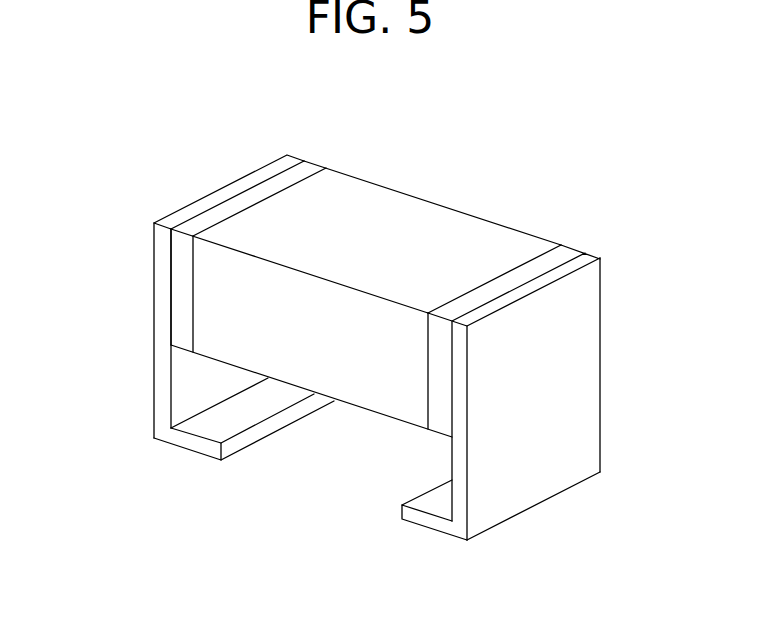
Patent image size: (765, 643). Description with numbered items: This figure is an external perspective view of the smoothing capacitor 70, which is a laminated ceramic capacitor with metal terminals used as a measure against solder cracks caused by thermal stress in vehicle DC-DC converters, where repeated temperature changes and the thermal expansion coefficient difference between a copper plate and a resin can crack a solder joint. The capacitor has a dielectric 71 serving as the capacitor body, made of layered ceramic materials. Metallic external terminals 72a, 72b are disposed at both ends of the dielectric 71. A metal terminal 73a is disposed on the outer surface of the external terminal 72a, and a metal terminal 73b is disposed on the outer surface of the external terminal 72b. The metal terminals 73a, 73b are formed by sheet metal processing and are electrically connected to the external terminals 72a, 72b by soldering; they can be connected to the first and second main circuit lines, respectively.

The smoothing capacitor 70 is at (556, 133).
The dielectric 71 is at (383, 203).
The external terminal 72a is at (177, 276).
The external terminal 72b is at (563, 254).
The metal terminal 73a is at (157, 365).
The metal terminal 73b is at (548, 462).